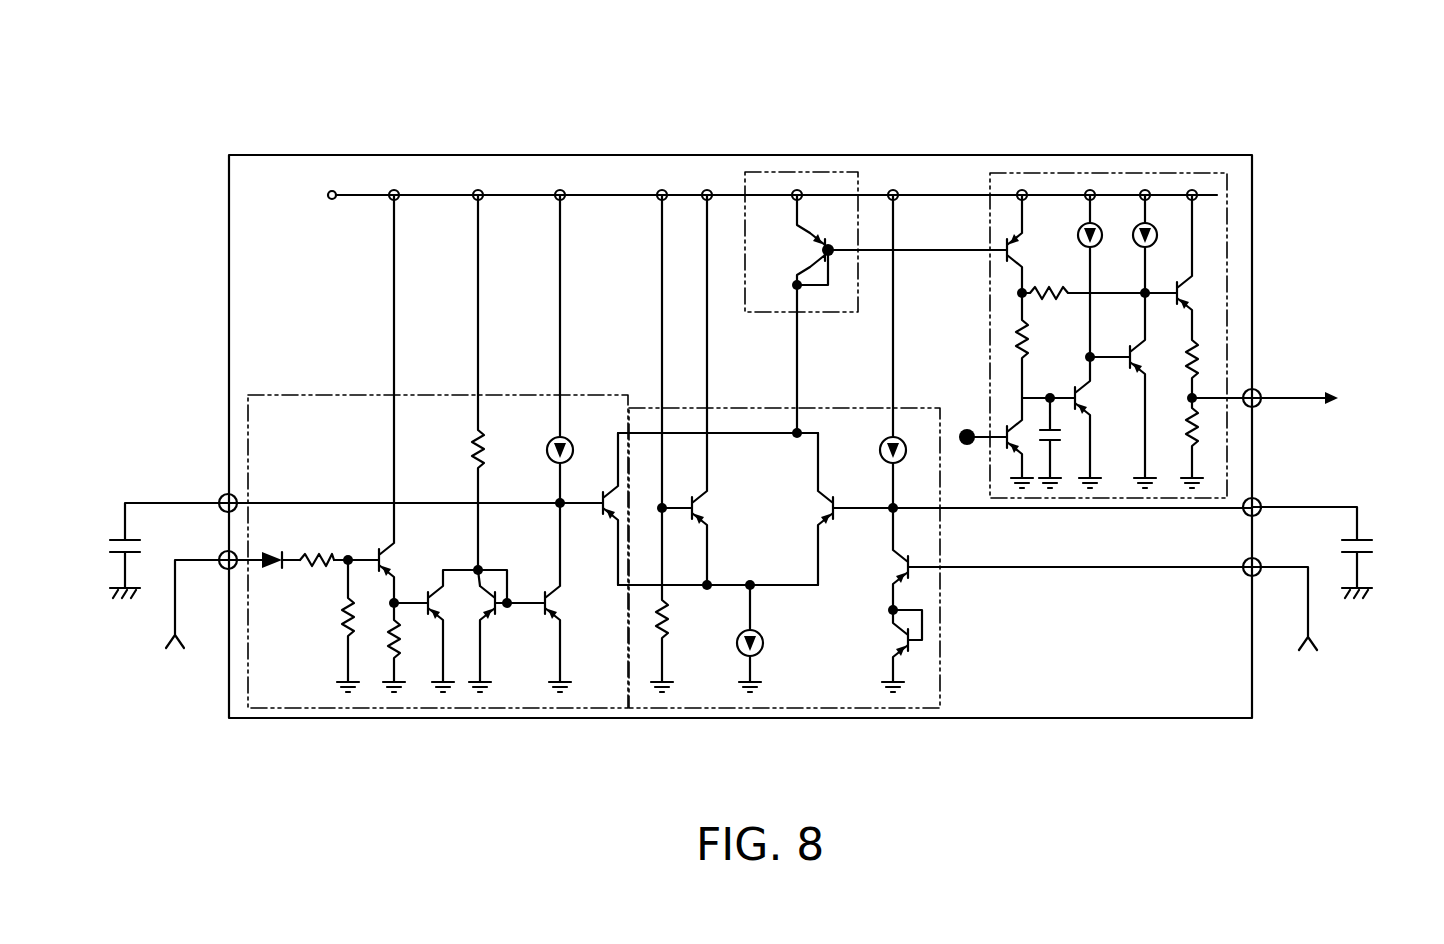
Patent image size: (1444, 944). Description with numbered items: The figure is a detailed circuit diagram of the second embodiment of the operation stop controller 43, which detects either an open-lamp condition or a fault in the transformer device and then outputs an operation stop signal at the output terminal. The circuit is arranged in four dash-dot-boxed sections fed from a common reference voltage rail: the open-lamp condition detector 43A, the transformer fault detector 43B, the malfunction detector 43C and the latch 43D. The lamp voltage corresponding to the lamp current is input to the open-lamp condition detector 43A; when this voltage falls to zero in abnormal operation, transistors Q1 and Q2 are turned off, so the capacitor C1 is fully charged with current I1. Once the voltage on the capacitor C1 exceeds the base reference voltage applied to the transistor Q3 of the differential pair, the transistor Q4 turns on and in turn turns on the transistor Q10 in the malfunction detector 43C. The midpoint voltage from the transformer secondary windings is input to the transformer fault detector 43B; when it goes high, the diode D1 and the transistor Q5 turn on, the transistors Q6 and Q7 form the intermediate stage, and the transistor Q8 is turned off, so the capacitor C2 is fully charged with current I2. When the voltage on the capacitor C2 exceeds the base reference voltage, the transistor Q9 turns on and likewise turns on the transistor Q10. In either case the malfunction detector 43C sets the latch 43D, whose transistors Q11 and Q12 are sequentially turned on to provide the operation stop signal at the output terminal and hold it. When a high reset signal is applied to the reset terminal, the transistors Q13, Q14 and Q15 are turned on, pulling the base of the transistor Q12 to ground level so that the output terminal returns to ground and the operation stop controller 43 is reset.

The operation stop controller 43 is at (577, 153).
The open-lamp condition detector 43A is at (832, 407).
The transformer fault detector 43B is at (302, 395).
The malfunction detector 43C is at (843, 172).
The latch 43D is at (1175, 173).
The transistor Q1 is at (887, 402).
The transistor Q2 is at (892, 648).
The transistor Q3 is at (698, 392).
The transistor Q4 is at (809, 509).
The transistor Q5 is at (402, 443).
The transistor Q6 is at (467, 631).
The transistor Q7 is at (492, 443).
The transistor Q8 is at (545, 443).
The transistor Q9 is at (600, 509).
The transistor Q10 is at (793, 242).
The transistor Q11 is at (1034, 244).
The transistor Q12 is at (1214, 341).
The transistor Q13 is at (995, 390).
The transistor Q14 is at (1077, 422).
The transistor Q15 is at (1120, 390).
The current I1 is at (882, 450).
The current I2 is at (546, 450).
The diode D1 is at (274, 544).
The capacitor C1 is at (1333, 552).
The capacitor C2 is at (146, 550).